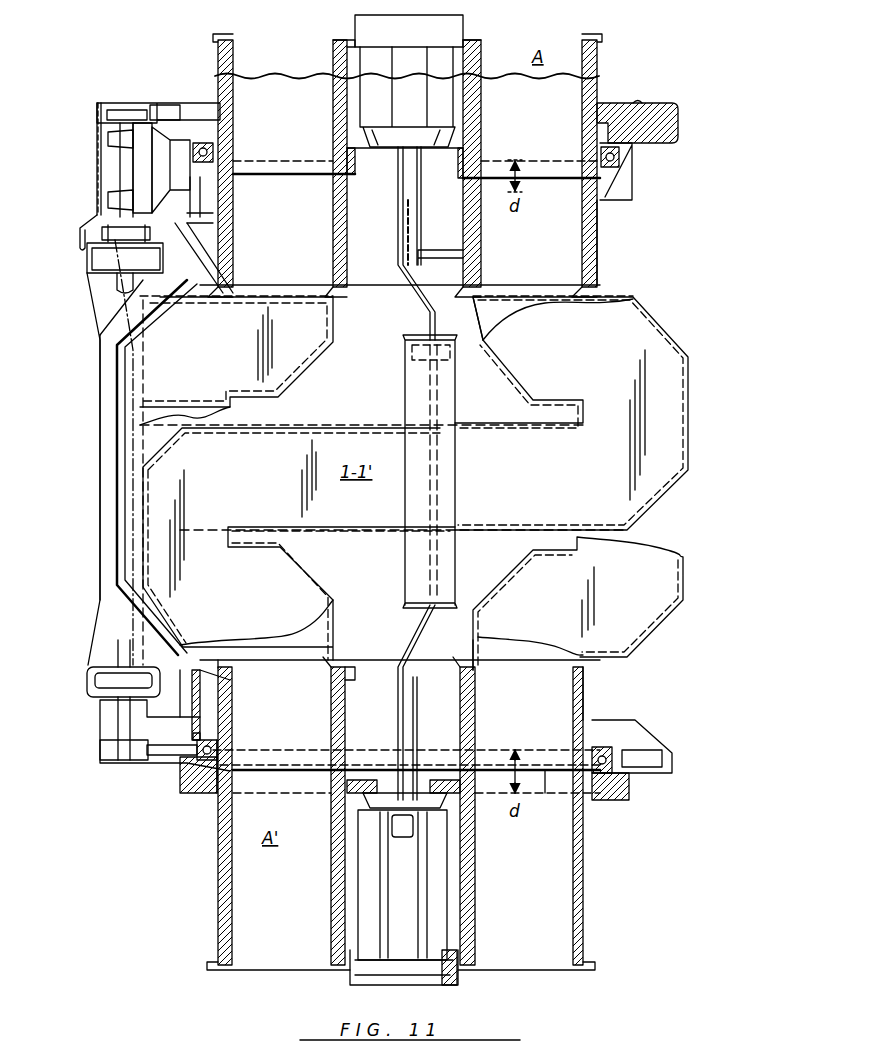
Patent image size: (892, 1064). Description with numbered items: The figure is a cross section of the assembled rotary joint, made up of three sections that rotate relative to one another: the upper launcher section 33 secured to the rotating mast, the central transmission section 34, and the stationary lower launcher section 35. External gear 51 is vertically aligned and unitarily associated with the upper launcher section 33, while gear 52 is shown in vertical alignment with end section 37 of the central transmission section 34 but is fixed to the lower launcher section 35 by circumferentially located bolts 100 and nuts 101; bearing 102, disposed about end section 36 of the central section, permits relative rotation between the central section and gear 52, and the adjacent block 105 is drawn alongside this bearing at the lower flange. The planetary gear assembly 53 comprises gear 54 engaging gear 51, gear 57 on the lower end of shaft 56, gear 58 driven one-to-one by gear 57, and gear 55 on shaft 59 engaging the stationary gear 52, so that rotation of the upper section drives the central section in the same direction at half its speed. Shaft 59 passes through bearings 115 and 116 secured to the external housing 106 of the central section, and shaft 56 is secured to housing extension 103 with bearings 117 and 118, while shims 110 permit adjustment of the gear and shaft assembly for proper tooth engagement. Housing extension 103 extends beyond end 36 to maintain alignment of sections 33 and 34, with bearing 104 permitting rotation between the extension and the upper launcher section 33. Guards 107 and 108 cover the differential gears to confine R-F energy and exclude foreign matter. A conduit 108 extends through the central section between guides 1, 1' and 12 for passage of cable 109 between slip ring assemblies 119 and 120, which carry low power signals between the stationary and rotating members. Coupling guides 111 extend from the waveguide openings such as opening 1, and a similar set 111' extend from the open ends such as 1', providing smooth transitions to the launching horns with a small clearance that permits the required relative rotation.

The waveguide opening 1 is at (509, 299).
The waveguide open end 1' is at (365, 666).
The guide 12 is at (97, 762).
The upper launcher section 33 is at (632, 80).
The central transmission section 34 is at (355, 233).
The lower launcher section 35 is at (585, 860).
The end section 36 is at (590, 207).
The end section 37 is at (545, 790).
The external gear 51 is at (158, 105).
The external gear 52 is at (160, 770).
The planetary gear assembly 53 is at (98, 430).
The gear 54 is at (115, 115).
The gear 55 is at (115, 775).
The shaft 56 is at (125, 170).
The gear 57 is at (70, 232).
The gear 58 is at (102, 233).
The shaft 59 is at (125, 455).
The bolt 100 is at (217, 775).
The nut 101 is at (195, 740).
The bearing 102 is at (217, 748).
The housing extension 103 is at (625, 192).
The bearing 104 is at (213, 152).
The block 105 is at (185, 780).
The external housing 106 is at (108, 510).
The guard 107 is at (100, 185).
The conduit 108 is at (428, 398).
The cable 109 is at (418, 308).
The shim 110 is at (145, 128).
The coupling guide 111 is at (625, 242).
The coupling guide 111' is at (622, 693).
The bearing 115 is at (87, 262).
The bearing 116 is at (90, 680).
The bearing 117 is at (110, 140).
The bearing 118 is at (110, 205).
The slip ring assembly 119 is at (440, 107).
The slip ring assembly 120 is at (425, 900).